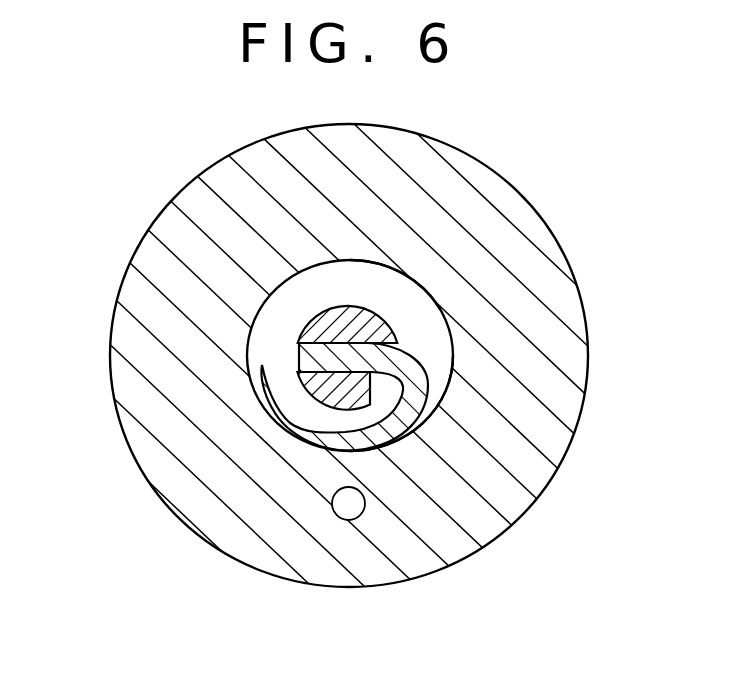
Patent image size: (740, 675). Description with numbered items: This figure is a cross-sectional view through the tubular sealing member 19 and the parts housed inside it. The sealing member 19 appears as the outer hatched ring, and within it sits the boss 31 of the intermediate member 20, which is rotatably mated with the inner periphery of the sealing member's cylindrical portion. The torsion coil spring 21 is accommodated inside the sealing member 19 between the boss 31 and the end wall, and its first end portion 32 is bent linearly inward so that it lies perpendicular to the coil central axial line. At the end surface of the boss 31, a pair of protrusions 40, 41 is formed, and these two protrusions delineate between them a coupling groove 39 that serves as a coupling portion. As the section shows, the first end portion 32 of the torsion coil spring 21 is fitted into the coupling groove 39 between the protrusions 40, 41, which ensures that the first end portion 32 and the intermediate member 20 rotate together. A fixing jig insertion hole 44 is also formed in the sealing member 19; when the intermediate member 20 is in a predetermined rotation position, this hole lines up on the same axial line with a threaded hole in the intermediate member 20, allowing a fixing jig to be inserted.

The sealing member 19 is at (540, 506).
The intermediate member 20 is at (442, 308).
The torsion coil spring 21 is at (403, 438).
The boss 31 is at (420, 288).
The first end portion 32 is at (342, 352).
The coupling groove 39 is at (335, 342).
The protrusion 40 is at (363, 318).
The protrusion 41 is at (332, 388).
The fixing jig insertion hole 44 is at (341, 519).